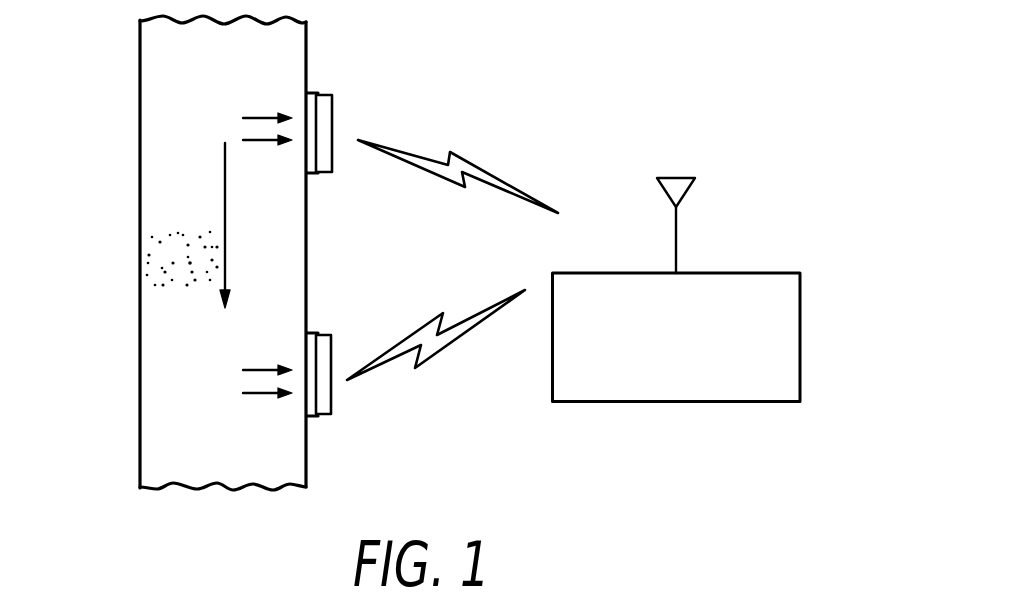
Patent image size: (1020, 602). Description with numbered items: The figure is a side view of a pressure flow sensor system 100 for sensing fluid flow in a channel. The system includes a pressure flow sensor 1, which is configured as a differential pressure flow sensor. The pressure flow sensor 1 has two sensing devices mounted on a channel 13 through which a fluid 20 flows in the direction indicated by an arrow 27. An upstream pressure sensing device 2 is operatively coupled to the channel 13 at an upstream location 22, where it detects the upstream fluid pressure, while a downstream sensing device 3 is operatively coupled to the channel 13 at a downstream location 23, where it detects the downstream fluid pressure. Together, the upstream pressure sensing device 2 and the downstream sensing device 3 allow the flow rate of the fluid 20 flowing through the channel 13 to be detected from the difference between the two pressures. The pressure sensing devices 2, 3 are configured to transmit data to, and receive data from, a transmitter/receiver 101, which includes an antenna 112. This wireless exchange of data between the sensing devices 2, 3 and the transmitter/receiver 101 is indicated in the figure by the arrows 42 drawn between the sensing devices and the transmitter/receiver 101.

The pressure flow sensor 1 is at (487, 102).
The upstream pressure sensing device 2 is at (325, 93).
The downstream sensing device 3 is at (322, 417).
The channel 13 is at (140, 67).
The fluid 20 is at (196, 85).
The upstream location 22 is at (177, 147).
The downstream location 23 is at (177, 412).
The arrow 27 is at (223, 220).
The arrows 42 is at (440, 180).
The pressure flow sensor system 100 is at (790, 142).
The transmitter/receiver 101 is at (800, 333).
The antenna 112 is at (683, 196).